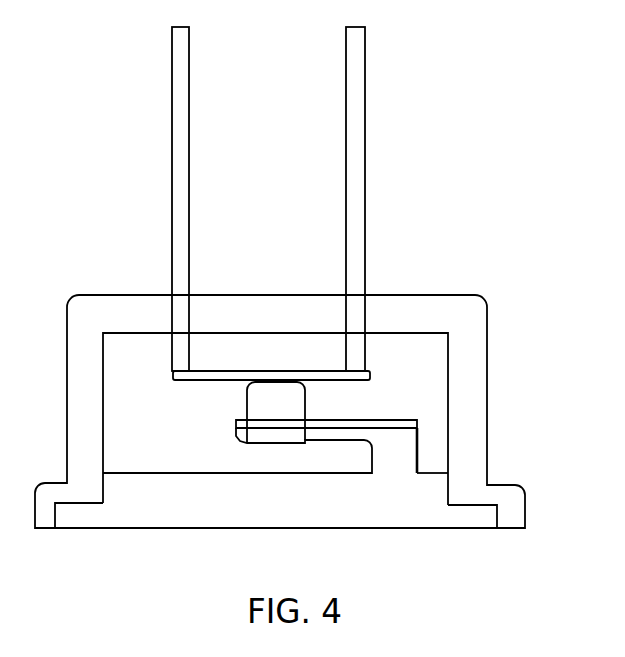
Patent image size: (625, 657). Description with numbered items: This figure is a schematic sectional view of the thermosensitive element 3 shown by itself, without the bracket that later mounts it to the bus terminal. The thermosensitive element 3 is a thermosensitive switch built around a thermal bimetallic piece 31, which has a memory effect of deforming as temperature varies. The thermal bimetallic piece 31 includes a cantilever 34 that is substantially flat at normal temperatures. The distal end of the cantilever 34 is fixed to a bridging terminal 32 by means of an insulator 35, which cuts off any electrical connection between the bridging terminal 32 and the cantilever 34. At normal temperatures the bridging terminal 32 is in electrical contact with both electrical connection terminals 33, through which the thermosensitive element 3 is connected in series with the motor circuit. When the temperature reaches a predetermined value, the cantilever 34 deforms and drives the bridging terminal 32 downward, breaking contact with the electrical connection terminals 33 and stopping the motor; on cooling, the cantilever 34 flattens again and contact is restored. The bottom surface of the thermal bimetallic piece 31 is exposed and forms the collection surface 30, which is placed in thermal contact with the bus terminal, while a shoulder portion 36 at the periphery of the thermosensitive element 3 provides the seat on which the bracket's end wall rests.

The thermosensitive element 3 is at (505, 149).
The collection surface 30 is at (157, 527).
The thermal bimetallic piece 31 is at (303, 503).
The bridging terminal 32 is at (228, 378).
The electrical connection terminals 33 is at (184, 78).
The cantilever 34 is at (340, 425).
The insulator 35 is at (283, 397).
The shoulder portion 36 is at (503, 483).